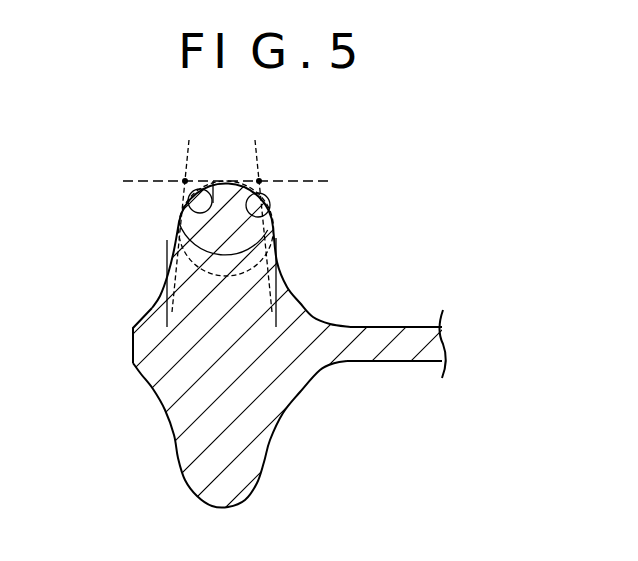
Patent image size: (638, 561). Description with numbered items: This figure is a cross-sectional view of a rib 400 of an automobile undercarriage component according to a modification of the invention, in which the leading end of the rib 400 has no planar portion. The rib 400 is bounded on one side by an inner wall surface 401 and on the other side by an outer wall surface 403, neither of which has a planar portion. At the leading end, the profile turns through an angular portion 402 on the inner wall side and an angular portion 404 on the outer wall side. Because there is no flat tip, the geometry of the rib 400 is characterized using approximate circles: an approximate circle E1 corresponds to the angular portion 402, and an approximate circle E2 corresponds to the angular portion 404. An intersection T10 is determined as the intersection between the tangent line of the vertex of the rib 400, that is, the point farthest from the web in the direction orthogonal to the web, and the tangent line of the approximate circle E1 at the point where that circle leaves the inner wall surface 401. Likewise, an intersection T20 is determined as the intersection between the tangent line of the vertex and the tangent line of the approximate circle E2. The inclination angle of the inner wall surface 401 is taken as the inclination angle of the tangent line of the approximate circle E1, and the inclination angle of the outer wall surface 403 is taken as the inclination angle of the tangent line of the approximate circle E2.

The rib 400 is at (374, 147).
The inner wall surface 401 is at (302, 302).
The angular portion 402 is at (266, 208).
The outer wall surface 403 is at (158, 298).
The angular portion 404 is at (188, 210).
The intersection T10 is at (261, 179).
The intersection T20 is at (183, 179).
The approximate circle E1 is at (213, 181).
The approximate circle E2 is at (180, 226).